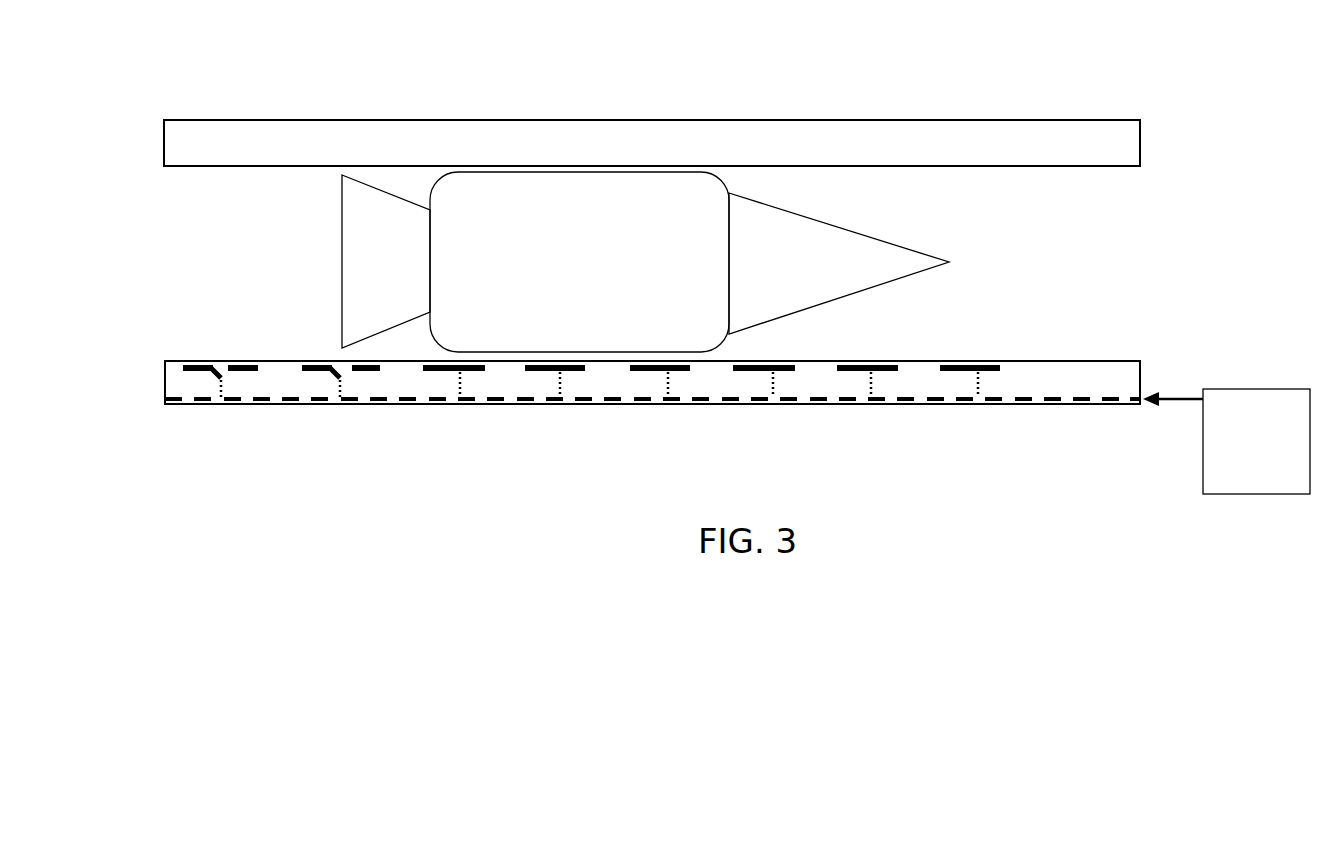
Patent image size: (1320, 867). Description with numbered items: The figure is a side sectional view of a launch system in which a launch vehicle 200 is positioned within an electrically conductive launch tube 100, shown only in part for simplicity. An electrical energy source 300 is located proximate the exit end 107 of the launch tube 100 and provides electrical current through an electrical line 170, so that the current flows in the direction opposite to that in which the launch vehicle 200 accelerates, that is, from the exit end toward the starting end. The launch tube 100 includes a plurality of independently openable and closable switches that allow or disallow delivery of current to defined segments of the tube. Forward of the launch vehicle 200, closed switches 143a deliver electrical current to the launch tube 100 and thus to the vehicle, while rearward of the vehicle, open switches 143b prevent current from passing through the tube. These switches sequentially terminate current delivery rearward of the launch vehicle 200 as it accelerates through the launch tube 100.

The launch tube 100 is at (138, 108).
The exit end 107 is at (1138, 78).
The launch vehicle 200 is at (205, 280).
The closed switches 143a is at (962, 364).
The open switches 143b is at (322, 362).
The electrical line 170 is at (1183, 402).
The electrical energy source 300 is at (1238, 451).